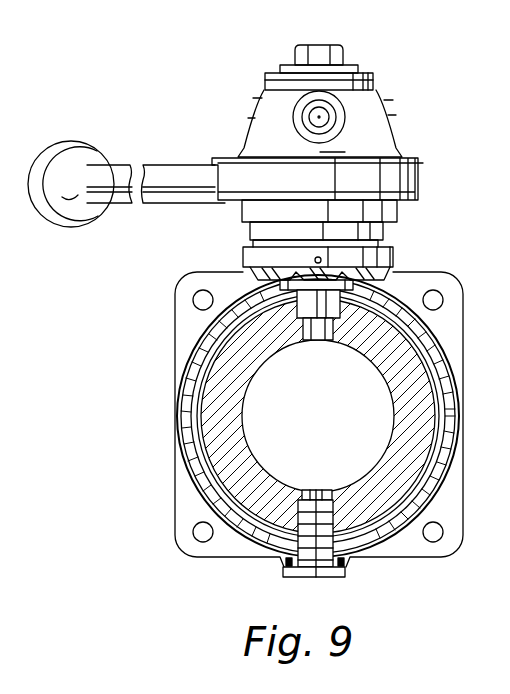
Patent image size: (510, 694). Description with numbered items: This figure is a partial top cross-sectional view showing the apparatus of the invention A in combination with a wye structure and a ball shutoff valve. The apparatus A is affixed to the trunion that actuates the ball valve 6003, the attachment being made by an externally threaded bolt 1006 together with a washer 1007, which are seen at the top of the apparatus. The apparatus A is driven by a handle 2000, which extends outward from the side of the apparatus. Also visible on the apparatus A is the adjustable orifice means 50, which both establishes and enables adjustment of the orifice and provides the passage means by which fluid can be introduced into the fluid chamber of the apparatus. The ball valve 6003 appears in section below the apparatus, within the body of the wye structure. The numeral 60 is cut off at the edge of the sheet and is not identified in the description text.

The externally threaded bolt 1006 is at (317, 52).
The adjustable orifice means 50 is at (322, 113).
The washer 1007 is at (363, 70).
The apparatus of the invention A is at (399, 128).
The handle 2000 is at (158, 165).
The ball valve 6003 is at (210, 441).
The housing 60 is at (491, 13).